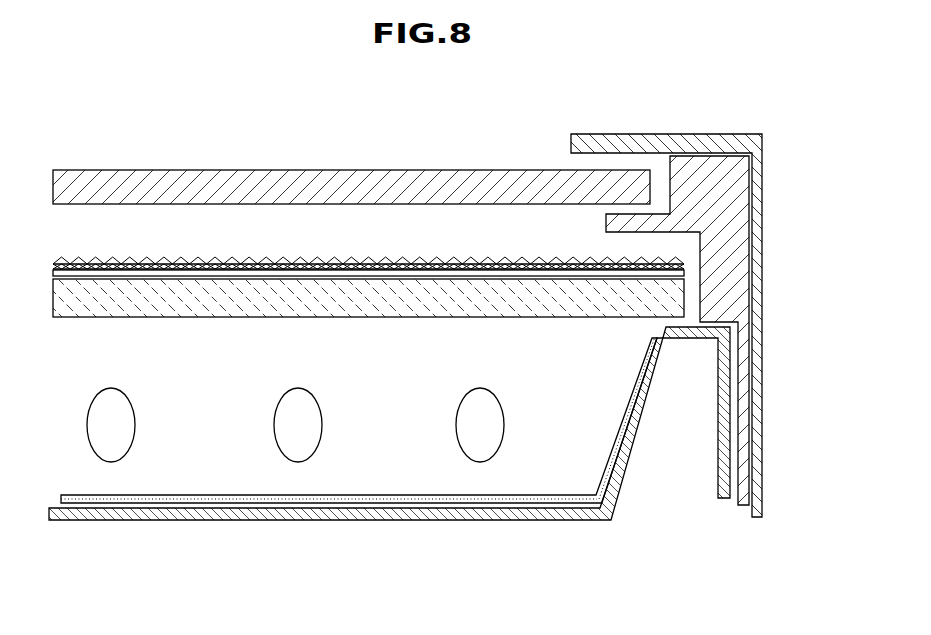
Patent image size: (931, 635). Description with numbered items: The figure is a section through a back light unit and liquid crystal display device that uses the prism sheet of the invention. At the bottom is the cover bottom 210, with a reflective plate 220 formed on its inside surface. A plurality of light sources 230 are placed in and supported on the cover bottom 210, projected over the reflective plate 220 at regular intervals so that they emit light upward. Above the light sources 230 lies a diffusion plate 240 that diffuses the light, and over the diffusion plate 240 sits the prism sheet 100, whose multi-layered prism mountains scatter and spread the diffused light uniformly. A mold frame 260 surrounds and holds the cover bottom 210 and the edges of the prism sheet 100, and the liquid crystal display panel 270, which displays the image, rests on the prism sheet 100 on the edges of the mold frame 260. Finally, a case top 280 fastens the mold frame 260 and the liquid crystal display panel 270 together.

The prism sheet 100 is at (680, 252).
The cover bottom 210 is at (212, 522).
The reflective plate 220 is at (388, 504).
The light sources 230 is at (295, 452).
The diffusion plate 240 is at (673, 300).
The mold frame 260 is at (742, 196).
The liquid crystal display panel 270 is at (349, 181).
The case top 280 is at (757, 143).